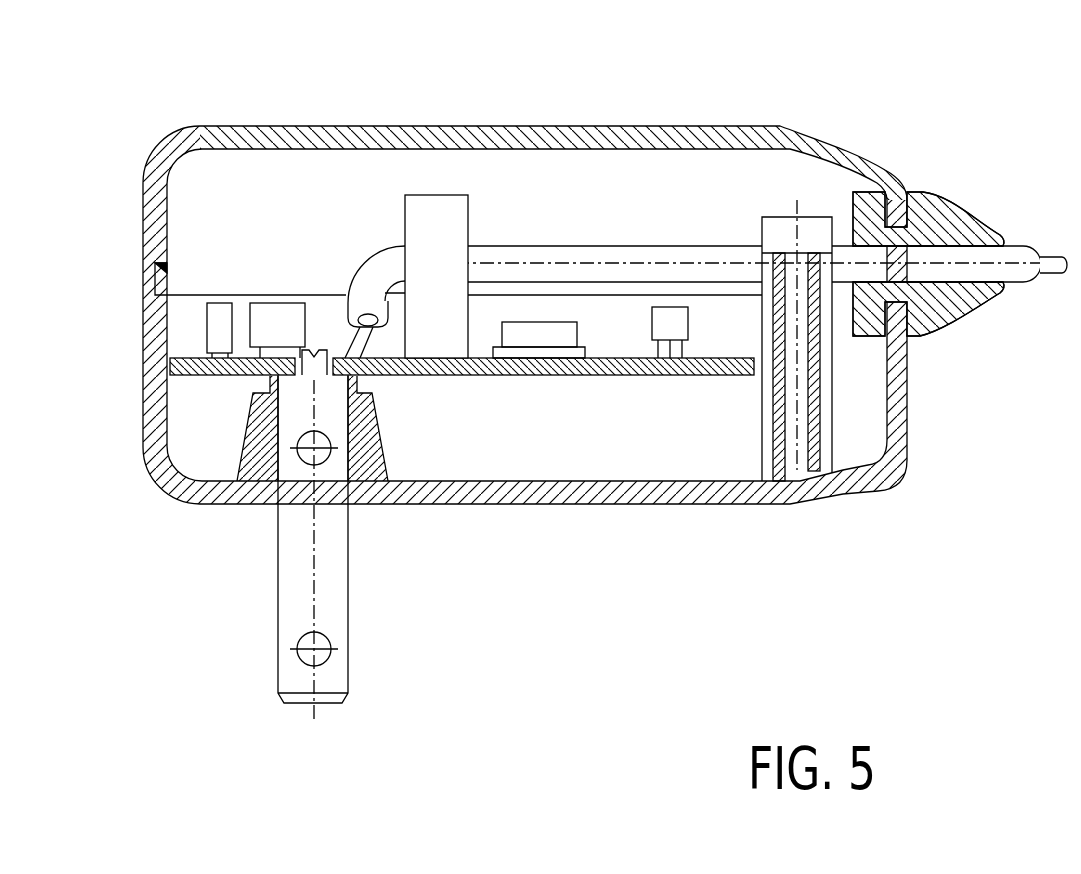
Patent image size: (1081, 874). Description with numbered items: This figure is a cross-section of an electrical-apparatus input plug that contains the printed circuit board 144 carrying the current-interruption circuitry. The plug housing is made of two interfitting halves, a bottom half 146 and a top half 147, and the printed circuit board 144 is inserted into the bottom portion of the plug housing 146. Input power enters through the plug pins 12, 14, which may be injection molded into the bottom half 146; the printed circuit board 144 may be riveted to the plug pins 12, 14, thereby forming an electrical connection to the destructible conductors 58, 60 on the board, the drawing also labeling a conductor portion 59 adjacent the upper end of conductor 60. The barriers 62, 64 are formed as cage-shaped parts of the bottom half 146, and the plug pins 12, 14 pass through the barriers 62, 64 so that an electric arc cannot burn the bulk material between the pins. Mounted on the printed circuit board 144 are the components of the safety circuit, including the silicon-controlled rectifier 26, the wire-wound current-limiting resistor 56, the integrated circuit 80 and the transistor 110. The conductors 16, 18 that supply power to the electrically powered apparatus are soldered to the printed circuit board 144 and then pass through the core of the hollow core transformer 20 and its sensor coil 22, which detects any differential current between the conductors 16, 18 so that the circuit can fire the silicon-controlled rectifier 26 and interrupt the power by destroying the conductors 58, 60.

The plug pin 12 is at (332, 600).
The plug pin 14 is at (379, 562).
The conductor 16 is at (1042, 265).
The conductor 18 is at (748, 365).
The hollow core transformer 20 is at (470, 185).
The sensor coil 22 is at (450, 217).
The silicon-controlled rectifier 26 is at (275, 330).
The resistor 56 is at (218, 327).
The destructible conductor 58 is at (359, 342).
The upper tube end 59 is at (376, 286).
The destructible conductor 60 is at (417, 341).
The barrier 62 is at (258, 380).
The barrier 64 is at (270, 522).
The integrated circuit 80 is at (543, 330).
The transistor 110 is at (673, 366).
The printed circuit board 144 is at (716, 367).
The bottom half of plug housing 146 is at (838, 480).
The top half of plug housing 147 is at (740, 136).